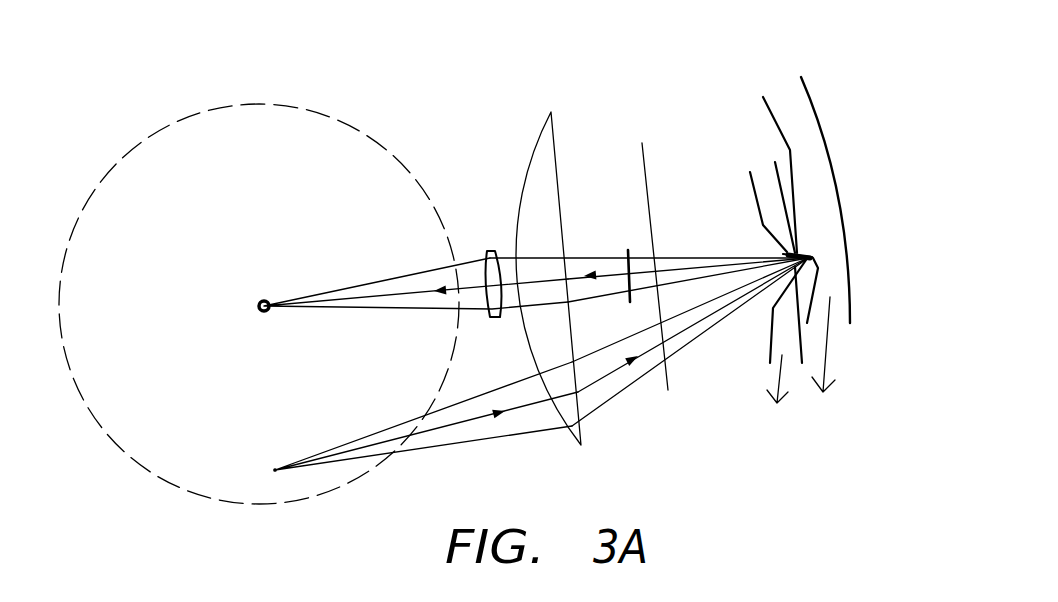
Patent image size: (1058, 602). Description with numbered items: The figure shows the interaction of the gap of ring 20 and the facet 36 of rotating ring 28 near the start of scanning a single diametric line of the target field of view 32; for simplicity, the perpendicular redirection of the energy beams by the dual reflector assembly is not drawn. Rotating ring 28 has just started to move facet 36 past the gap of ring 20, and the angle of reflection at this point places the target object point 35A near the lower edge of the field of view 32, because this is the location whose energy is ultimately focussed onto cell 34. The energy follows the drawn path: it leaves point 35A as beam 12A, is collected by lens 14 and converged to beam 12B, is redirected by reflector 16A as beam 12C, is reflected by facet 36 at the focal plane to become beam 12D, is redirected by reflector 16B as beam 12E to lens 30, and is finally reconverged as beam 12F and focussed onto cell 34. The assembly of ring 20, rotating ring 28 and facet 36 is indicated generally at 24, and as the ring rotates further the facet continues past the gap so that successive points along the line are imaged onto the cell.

The field of view 32 is at (193, 113).
The cell 34 is at (260, 311).
The target object point 35A is at (275, 469).
The lens 30 is at (490, 250).
The lens 14 is at (542, 140).
The reflector 16A is at (645, 170).
The reflector 16B is at (629, 256).
The beam 12A is at (440, 430).
The beam 12B is at (590, 384).
The beam 12C is at (678, 329).
The beam 12D is at (673, 257).
The beam 12E is at (599, 282).
The beam 12F is at (397, 292).
The ring 20 is at (770, 201).
The rotating ring 28 is at (803, 125).
The facet 36 is at (798, 174).
The focusing assembly 24 is at (702, 76).